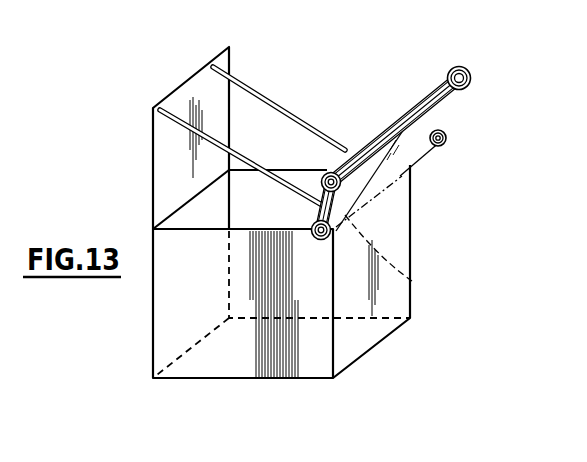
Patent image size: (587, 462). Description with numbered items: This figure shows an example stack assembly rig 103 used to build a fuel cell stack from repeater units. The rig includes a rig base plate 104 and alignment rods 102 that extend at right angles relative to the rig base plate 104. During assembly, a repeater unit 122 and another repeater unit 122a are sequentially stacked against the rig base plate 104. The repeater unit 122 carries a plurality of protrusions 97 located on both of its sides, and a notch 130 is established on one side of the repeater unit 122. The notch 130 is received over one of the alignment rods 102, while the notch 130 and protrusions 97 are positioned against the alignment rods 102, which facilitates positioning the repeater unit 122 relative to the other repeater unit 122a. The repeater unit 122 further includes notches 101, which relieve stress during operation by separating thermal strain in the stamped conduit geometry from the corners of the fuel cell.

The protrusions 97 is at (403, 106).
The notches 101 is at (340, 149).
The alignment rods 102 is at (246, 91).
The stack assembly rig 103 is at (233, 350).
The rig base plate 104 is at (418, 148).
The repeater unit 122 is at (453, 98).
The repeater unit 122a is at (440, 82).
The notch 130 is at (412, 281).